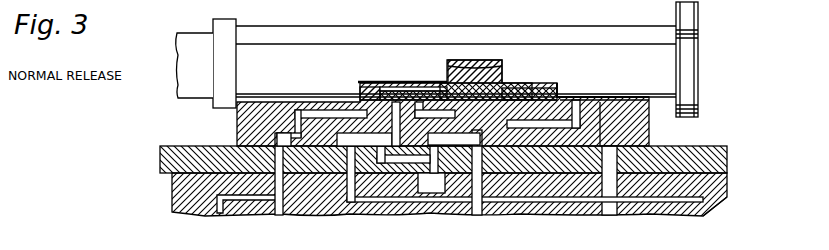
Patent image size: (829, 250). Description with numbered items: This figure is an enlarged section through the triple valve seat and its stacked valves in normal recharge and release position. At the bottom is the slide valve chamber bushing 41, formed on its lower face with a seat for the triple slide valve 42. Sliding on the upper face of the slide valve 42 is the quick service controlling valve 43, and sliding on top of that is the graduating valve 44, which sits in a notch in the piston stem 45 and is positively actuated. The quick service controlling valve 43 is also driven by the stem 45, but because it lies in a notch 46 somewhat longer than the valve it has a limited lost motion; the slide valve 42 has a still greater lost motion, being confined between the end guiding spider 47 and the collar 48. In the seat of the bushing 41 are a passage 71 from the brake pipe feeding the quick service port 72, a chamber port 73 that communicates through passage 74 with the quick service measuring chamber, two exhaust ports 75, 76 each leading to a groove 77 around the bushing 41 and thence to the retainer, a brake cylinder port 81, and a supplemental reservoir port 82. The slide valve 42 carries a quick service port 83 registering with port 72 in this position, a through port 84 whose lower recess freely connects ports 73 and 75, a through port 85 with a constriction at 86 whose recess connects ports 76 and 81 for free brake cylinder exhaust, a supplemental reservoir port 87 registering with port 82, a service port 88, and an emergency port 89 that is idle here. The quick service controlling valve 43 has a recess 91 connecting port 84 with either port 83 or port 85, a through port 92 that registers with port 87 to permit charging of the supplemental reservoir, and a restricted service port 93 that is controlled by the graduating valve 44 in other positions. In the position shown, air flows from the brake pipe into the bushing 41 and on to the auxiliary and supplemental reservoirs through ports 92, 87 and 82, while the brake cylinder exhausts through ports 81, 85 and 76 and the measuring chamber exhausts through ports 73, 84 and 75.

The slide valve chamber bushing 41 is at (717, 147).
The triple slide valve 42 is at (638, 128).
The quick service controlling valve 43 is at (553, 83).
The graduating valve 44 is at (498, 70).
The piston stem 45 is at (266, 33).
The notch 46 is at (358, 84).
The end guiding spider 47 is at (699, 15).
The collar 48 is at (217, 30).
The passage 71 is at (220, 208).
The quick service port 72 is at (278, 168).
The chamber port 73 is at (334, 207).
The passage 74 is at (668, 204).
The exhaust port 75 is at (352, 200).
The exhaust port 76 is at (436, 178).
The groove 77 is at (425, 190).
The brake cylinder port 81 is at (480, 197).
The supplemental reservoir port 82 is at (670, 148).
The quick service port 83 is at (278, 140).
The through port 84 is at (395, 90).
The through port 85 is at (408, 91).
The constriction 86 is at (477, 165).
The supplemental reservoir port 87 is at (468, 68).
The service port 88 is at (568, 99).
The emergency port 89 is at (613, 100).
The recess 91 is at (383, 84).
The through port 92 is at (438, 92).
The restricted service port 93 is at (522, 90).